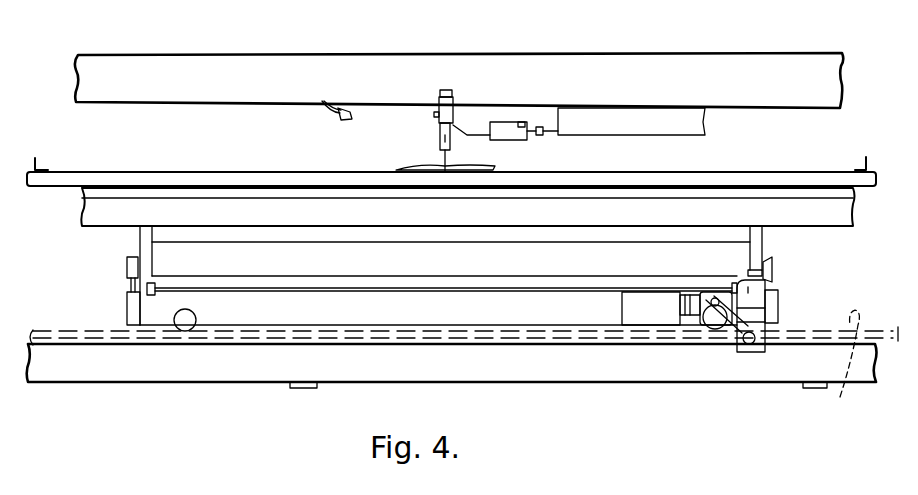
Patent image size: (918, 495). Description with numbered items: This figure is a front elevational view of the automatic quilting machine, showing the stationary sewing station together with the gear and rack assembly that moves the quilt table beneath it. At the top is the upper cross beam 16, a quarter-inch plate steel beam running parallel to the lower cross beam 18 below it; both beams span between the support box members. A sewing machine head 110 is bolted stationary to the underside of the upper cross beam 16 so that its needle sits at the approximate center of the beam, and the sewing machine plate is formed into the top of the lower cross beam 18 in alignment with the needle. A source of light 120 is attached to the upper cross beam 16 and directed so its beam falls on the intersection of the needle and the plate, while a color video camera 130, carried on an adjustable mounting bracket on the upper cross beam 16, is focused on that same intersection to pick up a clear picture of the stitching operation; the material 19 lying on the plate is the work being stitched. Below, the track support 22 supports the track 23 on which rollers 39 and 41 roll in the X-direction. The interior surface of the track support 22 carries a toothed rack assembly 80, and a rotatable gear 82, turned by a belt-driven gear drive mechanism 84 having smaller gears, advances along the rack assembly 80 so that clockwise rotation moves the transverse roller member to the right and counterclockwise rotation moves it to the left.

The upper cross beam 16 is at (745, 68).
The lower cross beam 18 is at (723, 212).
The workpiece strip 19 is at (495, 166).
The track support 22 is at (690, 375).
The track 23 is at (817, 330).
The roller 39 is at (178, 310).
The roller 41 is at (692, 303).
The rack assembly 80 is at (842, 363).
The rotatable gear 82 is at (775, 276).
The gear drive mechanism 84 is at (778, 315).
The sewing machine head 110 is at (499, 116).
The source of light 120 is at (338, 118).
The color video camera 130 is at (443, 108).